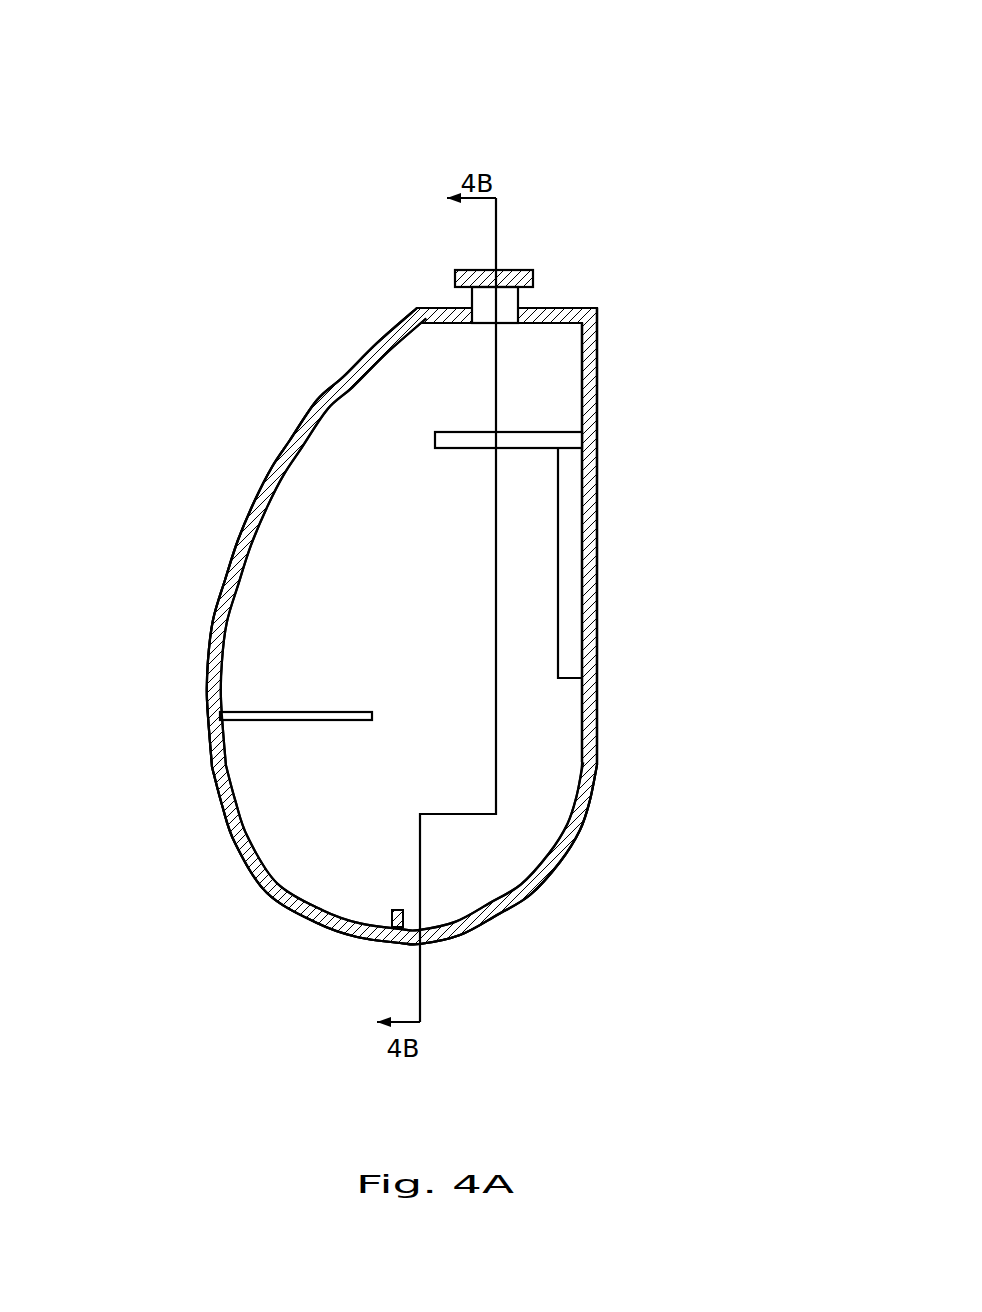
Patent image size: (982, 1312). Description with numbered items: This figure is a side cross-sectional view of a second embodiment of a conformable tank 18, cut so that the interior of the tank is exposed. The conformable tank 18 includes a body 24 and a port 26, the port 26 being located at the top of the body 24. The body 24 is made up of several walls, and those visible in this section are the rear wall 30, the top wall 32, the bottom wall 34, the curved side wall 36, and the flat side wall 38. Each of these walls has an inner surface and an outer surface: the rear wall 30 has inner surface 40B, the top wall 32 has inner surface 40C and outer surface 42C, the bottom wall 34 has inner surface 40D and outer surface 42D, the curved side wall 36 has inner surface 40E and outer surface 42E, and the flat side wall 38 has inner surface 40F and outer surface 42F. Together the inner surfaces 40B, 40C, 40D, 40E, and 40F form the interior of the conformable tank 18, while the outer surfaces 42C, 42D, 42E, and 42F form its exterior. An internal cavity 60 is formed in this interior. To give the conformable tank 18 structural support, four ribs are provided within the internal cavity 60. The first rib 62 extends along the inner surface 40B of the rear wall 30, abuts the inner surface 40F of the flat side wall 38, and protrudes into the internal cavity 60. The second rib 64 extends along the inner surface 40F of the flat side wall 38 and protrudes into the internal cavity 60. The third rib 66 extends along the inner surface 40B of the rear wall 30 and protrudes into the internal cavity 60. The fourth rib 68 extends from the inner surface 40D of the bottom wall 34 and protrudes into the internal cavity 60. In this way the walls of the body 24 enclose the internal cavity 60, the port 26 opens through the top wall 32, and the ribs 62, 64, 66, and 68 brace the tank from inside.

The conformable tank 18 is at (742, 112).
The body 24 is at (362, 320).
The port 26 is at (520, 270).
The rear wall 30 is at (537, 387).
The top wall 32 is at (432, 306).
The bottom wall 34 is at (445, 957).
The curved side wall 36 is at (209, 668).
The flat side wall 38 is at (598, 690).
The inner surface 40B is at (377, 564).
The inner surface 40C is at (540, 327).
The inner surface 40D is at (323, 903).
The inner surface 40E is at (234, 636).
The inner surface 40F is at (578, 722).
The outer surface 42C is at (556, 304).
The outer surface 42D is at (330, 936).
The outer surface 42E is at (267, 475).
The outer surface 42F is at (601, 503).
The internal cavity 60 is at (528, 796).
The first rib 62 is at (540, 441).
The second rib 64 is at (567, 575).
The third rib 66 is at (263, 714).
The fourth rib 68 is at (404, 917).